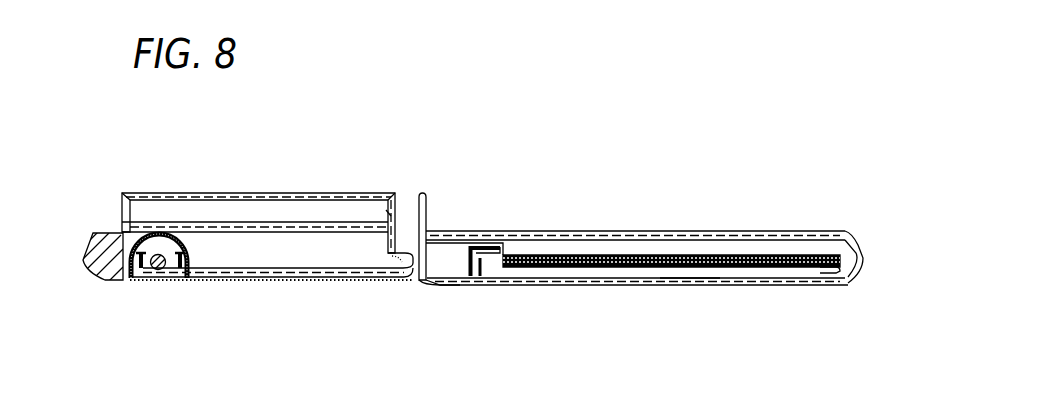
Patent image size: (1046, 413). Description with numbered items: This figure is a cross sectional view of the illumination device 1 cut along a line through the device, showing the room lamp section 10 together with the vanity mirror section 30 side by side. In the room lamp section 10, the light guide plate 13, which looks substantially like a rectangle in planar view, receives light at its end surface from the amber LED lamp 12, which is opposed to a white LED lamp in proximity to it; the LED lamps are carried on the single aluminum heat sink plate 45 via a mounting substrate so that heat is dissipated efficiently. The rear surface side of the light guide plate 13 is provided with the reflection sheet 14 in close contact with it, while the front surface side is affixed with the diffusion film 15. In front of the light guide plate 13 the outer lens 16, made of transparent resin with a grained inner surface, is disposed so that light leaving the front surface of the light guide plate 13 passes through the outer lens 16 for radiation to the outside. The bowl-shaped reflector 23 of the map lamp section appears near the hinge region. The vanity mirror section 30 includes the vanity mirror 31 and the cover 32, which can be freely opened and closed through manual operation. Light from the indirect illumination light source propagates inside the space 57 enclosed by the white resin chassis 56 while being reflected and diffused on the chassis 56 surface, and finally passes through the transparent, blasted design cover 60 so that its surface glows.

The illumination device 1 is at (478, 175).
The room lamp section 10 is at (602, 300).
The amber LED lamp 12 is at (488, 284).
The light guide plate 13 is at (765, 278).
The reflection sheet 14 is at (698, 253).
The diffusion film 15 is at (808, 283).
The outer lens 16 is at (687, 287).
The reflector 23 is at (452, 285).
The vanity mirror section 30 is at (310, 309).
The vanity mirror 31 is at (253, 280).
The cover 32 is at (194, 283).
The heat sink plate 45 is at (468, 253).
The chassis 56 is at (570, 231).
The space 57 is at (792, 249).
The design cover 60 is at (93, 276).